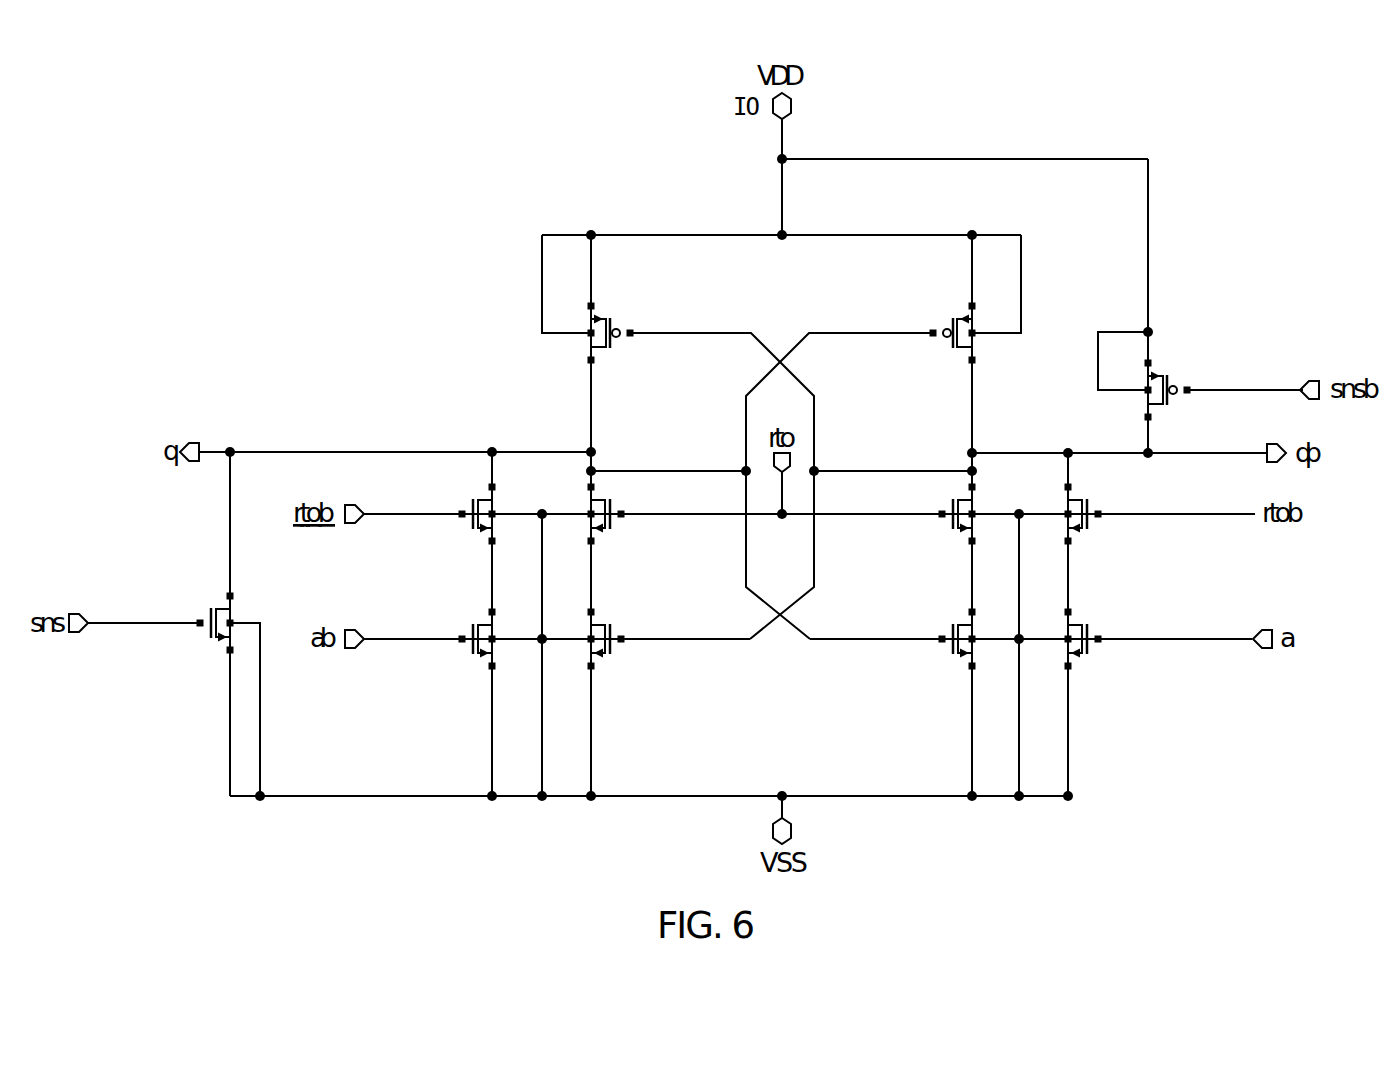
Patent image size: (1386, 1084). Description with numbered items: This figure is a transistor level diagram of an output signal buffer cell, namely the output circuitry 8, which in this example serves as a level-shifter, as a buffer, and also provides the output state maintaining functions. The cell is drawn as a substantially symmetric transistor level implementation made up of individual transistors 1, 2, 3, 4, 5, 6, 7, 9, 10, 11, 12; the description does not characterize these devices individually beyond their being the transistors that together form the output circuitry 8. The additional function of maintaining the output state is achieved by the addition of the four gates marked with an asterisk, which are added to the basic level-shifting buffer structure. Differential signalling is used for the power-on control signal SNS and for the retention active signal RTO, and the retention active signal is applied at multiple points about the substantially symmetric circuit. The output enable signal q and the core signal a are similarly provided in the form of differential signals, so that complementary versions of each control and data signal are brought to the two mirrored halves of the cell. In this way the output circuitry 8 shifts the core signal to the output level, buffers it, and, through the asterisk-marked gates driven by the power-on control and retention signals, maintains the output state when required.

The PMOS transistor 0.72u/0.6u RVT-2.5V (left cross-coupled load) 1 is at (662, 334).
The PMOS transistor 6u/0.26u RVT-2.5V (right cross-coupled load) 2 is at (904, 334).
The PMOS transistor 3u/0.26u RVT-2.5V (snsb pull-up) 3 is at (1219, 380).
The NMOS transistor 3u/0.26u//3 RVT-2.5V (left rtob) 4 is at (420, 507).
The NMOS transistor 1u/0.26u RVT-2.5V (left rtob) 5 is at (654, 520).
The NMOS transistor 1u/0.26u RVT-2.5V (right rtob) 6 is at (911, 520).
The NMOS transistor 3u/0.26u//3 RVT-2.5V (right rtob) 7 is at (1145, 507).
The output circuitry 8 is at (405, 635).
The NMOS transistor 0.5u/0.26u RVT-2.5V (left cross-coupled) 9 is at (659, 641).
The NMOS transistor 0.5u/0.26u RVT-2.5V (right cross-coupled) 10 is at (901, 641).
The NMOS transistor 6u/0.26u//6 RVT-2.5V (a) 11 is at (1138, 635).
The NMOS transistor 3.6u/0.26u RVT-2.5V (sns) 12 is at (161, 609).